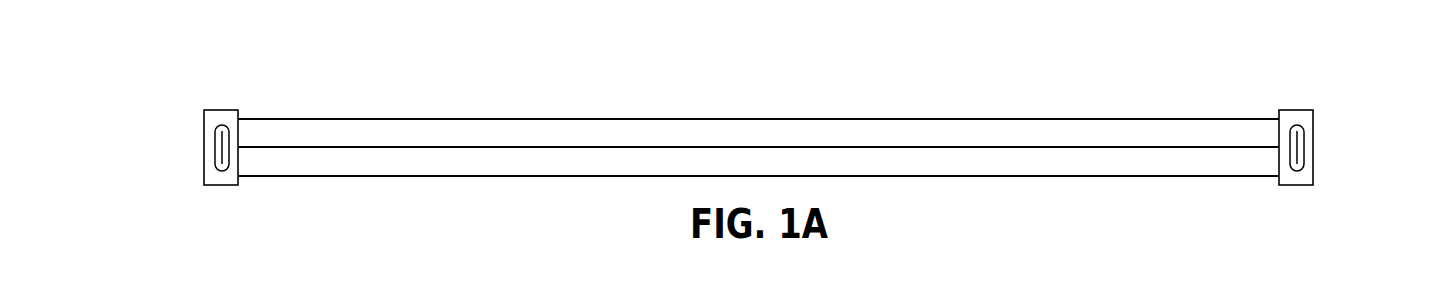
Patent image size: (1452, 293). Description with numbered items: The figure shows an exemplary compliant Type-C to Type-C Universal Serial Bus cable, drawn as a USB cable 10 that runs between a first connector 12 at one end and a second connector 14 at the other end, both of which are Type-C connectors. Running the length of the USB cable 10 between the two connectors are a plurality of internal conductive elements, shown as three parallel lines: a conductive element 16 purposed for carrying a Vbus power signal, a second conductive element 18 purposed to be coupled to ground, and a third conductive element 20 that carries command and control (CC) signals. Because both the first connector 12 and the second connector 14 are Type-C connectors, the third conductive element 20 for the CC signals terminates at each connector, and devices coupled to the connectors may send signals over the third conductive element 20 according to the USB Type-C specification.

The USB cable 10 is at (758, 127).
The first connector 12 is at (223, 110).
The second connector 14 is at (1300, 110).
The conductive element 16 is at (1133, 118).
The second conductive element 18 is at (1128, 176).
The third conductive element 20 is at (1086, 147).